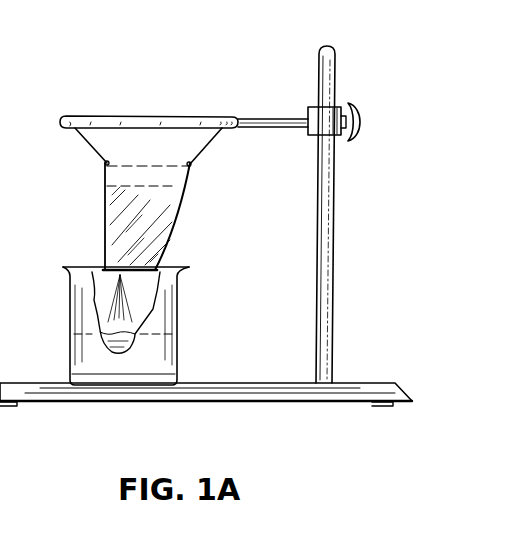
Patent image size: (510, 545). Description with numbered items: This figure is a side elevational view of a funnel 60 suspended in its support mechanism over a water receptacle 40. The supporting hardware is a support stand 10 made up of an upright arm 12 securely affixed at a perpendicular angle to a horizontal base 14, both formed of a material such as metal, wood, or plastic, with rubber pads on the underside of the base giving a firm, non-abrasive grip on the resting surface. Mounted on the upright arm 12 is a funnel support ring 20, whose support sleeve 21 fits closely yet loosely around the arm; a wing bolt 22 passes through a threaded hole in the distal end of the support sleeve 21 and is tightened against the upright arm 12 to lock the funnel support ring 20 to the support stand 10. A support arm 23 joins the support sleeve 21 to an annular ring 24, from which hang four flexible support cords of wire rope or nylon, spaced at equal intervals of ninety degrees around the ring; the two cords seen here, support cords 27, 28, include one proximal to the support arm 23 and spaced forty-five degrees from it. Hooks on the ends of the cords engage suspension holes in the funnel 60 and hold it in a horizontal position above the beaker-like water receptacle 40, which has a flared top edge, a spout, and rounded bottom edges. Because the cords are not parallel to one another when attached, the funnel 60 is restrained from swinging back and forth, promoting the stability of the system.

The support stand 10 is at (352, 348).
The upright arm 12 is at (325, 244).
The horizontal base 14 is at (28, 383).
The funnel support ring 20 is at (272, 106).
The support sleeve 21 is at (328, 116).
The wing bolt 22 is at (362, 112).
The support arm 23 is at (272, 130).
The annular ring 24 is at (163, 117).
The support cord 27 is at (96, 151).
The support cord 28 is at (206, 146).
The water receptacle 40 is at (70, 306).
The funnel 60 is at (160, 212).